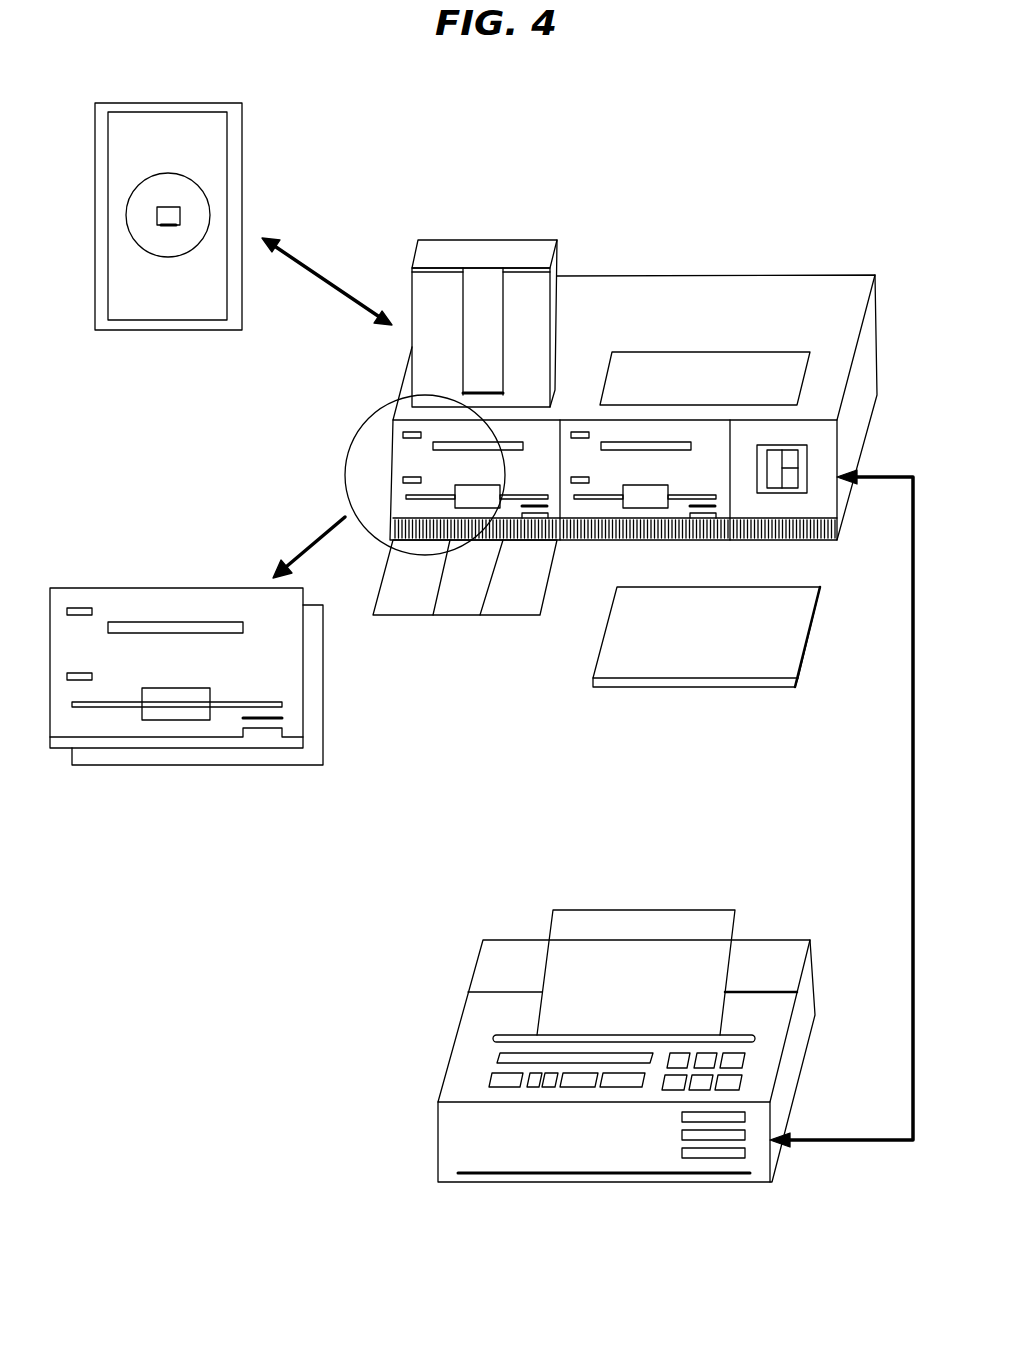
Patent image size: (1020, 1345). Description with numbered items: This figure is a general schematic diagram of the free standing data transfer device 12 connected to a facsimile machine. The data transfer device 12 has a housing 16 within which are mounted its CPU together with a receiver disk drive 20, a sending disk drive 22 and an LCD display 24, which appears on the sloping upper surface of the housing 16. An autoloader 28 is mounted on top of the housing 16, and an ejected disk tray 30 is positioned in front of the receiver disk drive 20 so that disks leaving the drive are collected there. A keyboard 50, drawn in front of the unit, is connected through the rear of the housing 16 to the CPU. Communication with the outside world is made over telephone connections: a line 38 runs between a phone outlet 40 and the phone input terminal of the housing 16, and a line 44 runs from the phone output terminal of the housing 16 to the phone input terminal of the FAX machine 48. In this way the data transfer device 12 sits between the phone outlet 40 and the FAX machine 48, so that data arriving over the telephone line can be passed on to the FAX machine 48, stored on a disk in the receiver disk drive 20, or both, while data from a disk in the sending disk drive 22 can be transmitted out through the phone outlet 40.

The free standing data transfer device 12 is at (667, 220).
The housing 16 is at (773, 275).
The receiver disk drive 20 is at (178, 588).
The sending disk drive 22 is at (597, 507).
The LCD display 24 is at (742, 352).
The autoloader 28 is at (497, 240).
The ejected disk tray 30 is at (480, 613).
The line 38 is at (318, 270).
The phone outlet 40 is at (242, 169).
The line 44 is at (912, 800).
The FAX machine 48 is at (438, 1138).
The keyboard 50 is at (675, 687).